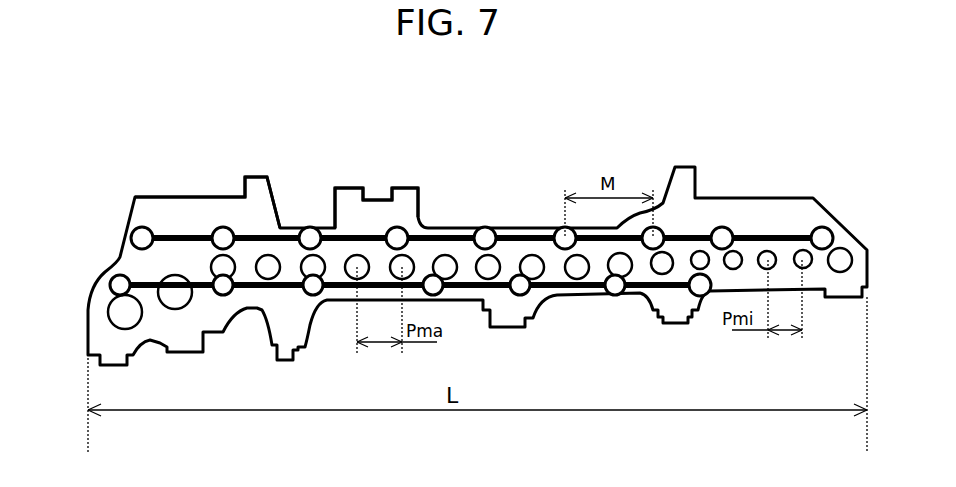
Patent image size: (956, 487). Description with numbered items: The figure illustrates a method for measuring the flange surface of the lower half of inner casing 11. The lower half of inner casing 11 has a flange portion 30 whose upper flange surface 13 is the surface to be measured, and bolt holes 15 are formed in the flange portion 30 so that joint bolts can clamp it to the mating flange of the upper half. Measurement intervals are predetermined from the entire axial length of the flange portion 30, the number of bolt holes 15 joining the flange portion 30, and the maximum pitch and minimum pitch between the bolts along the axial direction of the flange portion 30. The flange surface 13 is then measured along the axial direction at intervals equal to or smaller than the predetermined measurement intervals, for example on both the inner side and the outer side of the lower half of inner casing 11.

The lower half of inner casing 11 is at (740, 160).
The upper flange surface 13 is at (182, 197).
The flange portion 30 is at (405, 188).
The bolt holes 15 is at (117, 312).